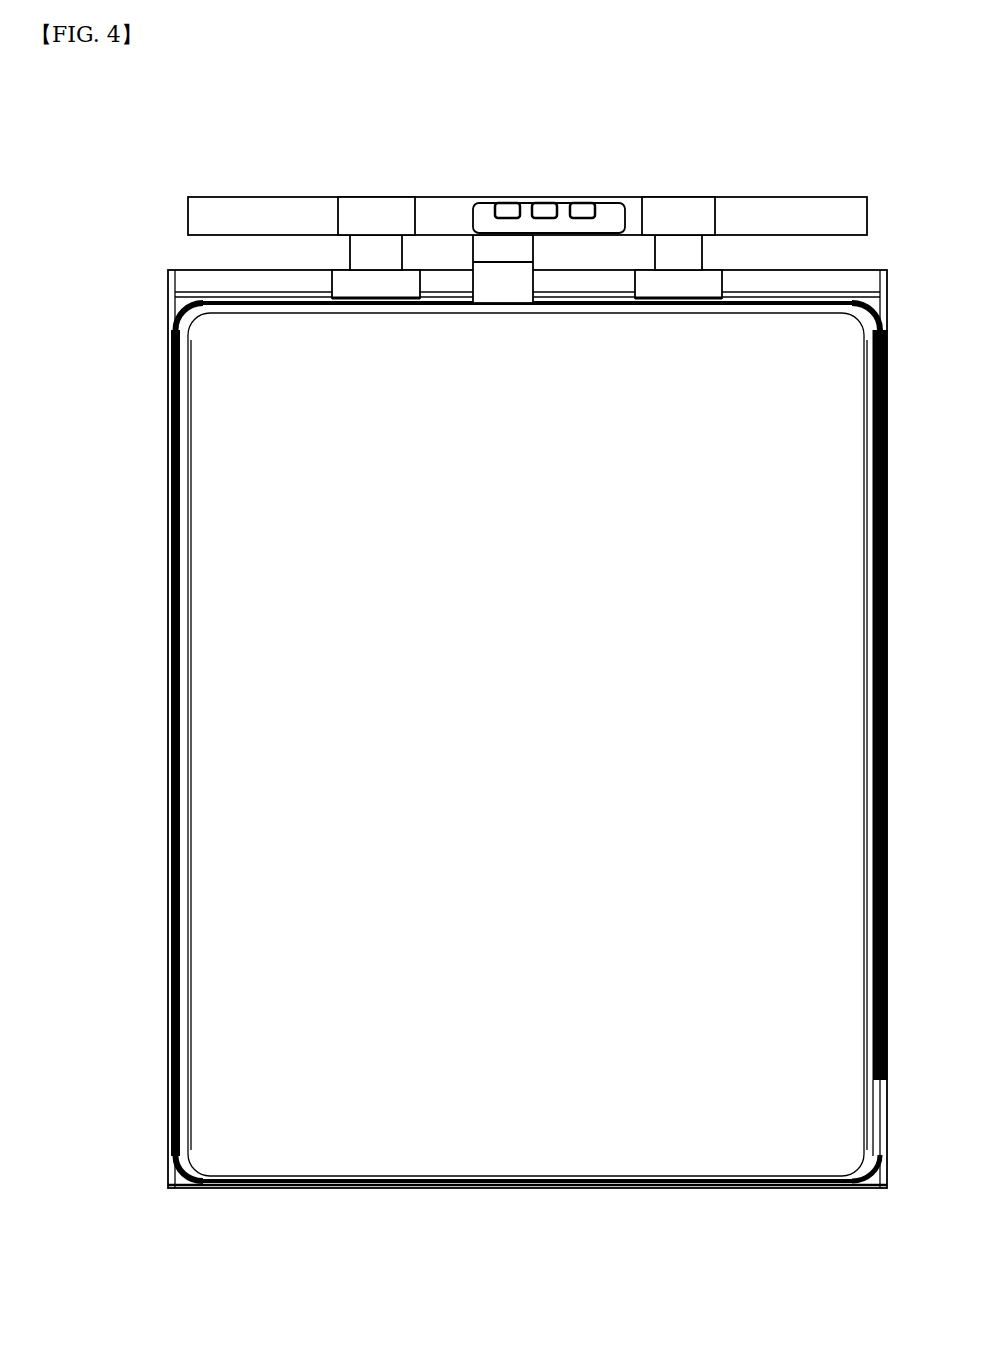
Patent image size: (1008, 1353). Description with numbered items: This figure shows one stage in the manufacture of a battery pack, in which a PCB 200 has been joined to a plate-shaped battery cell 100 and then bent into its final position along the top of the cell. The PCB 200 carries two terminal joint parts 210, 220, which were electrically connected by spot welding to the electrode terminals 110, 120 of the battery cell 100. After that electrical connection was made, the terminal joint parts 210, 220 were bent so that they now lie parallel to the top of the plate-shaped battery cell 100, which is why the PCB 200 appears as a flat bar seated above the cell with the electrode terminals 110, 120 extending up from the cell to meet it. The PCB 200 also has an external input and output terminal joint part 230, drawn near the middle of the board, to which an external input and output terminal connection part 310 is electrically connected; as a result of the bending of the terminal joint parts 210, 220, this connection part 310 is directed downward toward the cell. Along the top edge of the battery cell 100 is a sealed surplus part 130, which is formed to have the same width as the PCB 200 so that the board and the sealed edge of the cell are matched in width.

The plate-shaped battery cell 100 is at (563, 918).
The electrode terminal 110 is at (373, 252).
The electrode terminal 120 is at (685, 253).
The sealed surplus part 130 is at (292, 302).
The PCB 200 is at (165, 210).
The terminal joint part 210 is at (376, 212).
The terminal joint part 220 is at (681, 213).
The external input and output terminal joint part 230 is at (545, 210).
The external input and output terminal connection part 310 is at (510, 248).